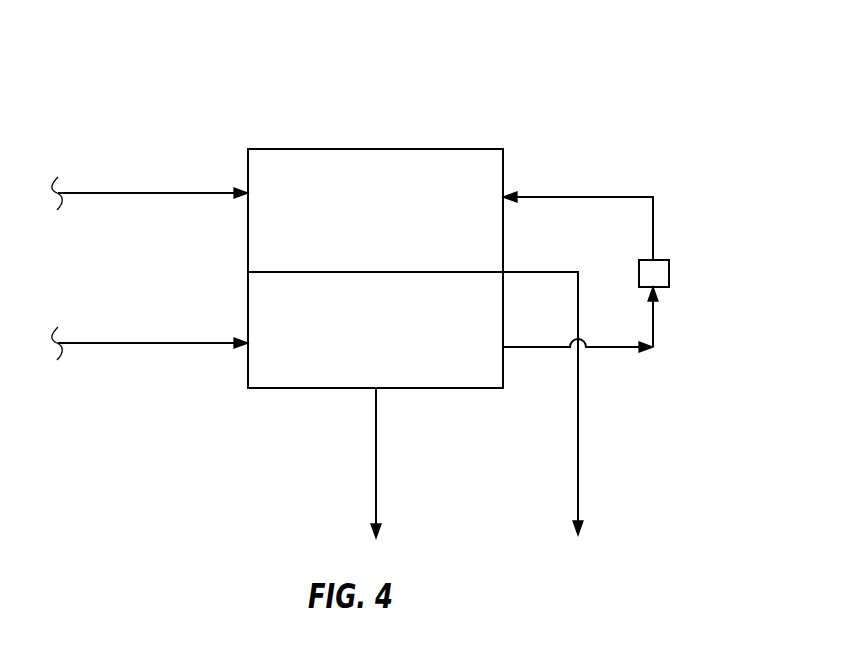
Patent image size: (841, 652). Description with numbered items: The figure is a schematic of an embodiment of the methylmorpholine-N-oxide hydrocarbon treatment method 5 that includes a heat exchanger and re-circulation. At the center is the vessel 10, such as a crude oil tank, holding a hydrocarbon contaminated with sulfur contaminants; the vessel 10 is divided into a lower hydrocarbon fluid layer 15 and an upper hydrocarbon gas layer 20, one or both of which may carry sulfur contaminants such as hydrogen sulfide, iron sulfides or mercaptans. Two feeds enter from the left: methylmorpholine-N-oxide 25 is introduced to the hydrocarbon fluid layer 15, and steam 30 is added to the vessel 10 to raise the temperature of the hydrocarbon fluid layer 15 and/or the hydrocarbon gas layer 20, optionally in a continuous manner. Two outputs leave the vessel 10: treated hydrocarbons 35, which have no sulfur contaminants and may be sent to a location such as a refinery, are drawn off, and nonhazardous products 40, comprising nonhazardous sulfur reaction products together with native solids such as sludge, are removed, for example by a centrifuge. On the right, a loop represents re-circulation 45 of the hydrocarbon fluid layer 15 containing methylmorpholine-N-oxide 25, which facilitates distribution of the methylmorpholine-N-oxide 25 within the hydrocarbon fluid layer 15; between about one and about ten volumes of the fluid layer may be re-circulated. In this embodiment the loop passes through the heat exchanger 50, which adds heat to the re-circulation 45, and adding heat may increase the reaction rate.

The methylmorpholine-N-oxide hydrocarbon treatment method 5 is at (629, 65).
The vessel 10 is at (285, 148).
The hydrocarbon fluid layer 15 is at (295, 350).
The hydrocarbon gas layer 20 is at (420, 178).
The methylmorpholine-N-oxide 25 is at (158, 343).
The steam 30 is at (122, 192).
The treated hydrocarbons 35 is at (578, 437).
The nonhazardous products 40 is at (376, 435).
The re-circulation 45 is at (578, 193).
The heat exchanger 50 is at (670, 273).